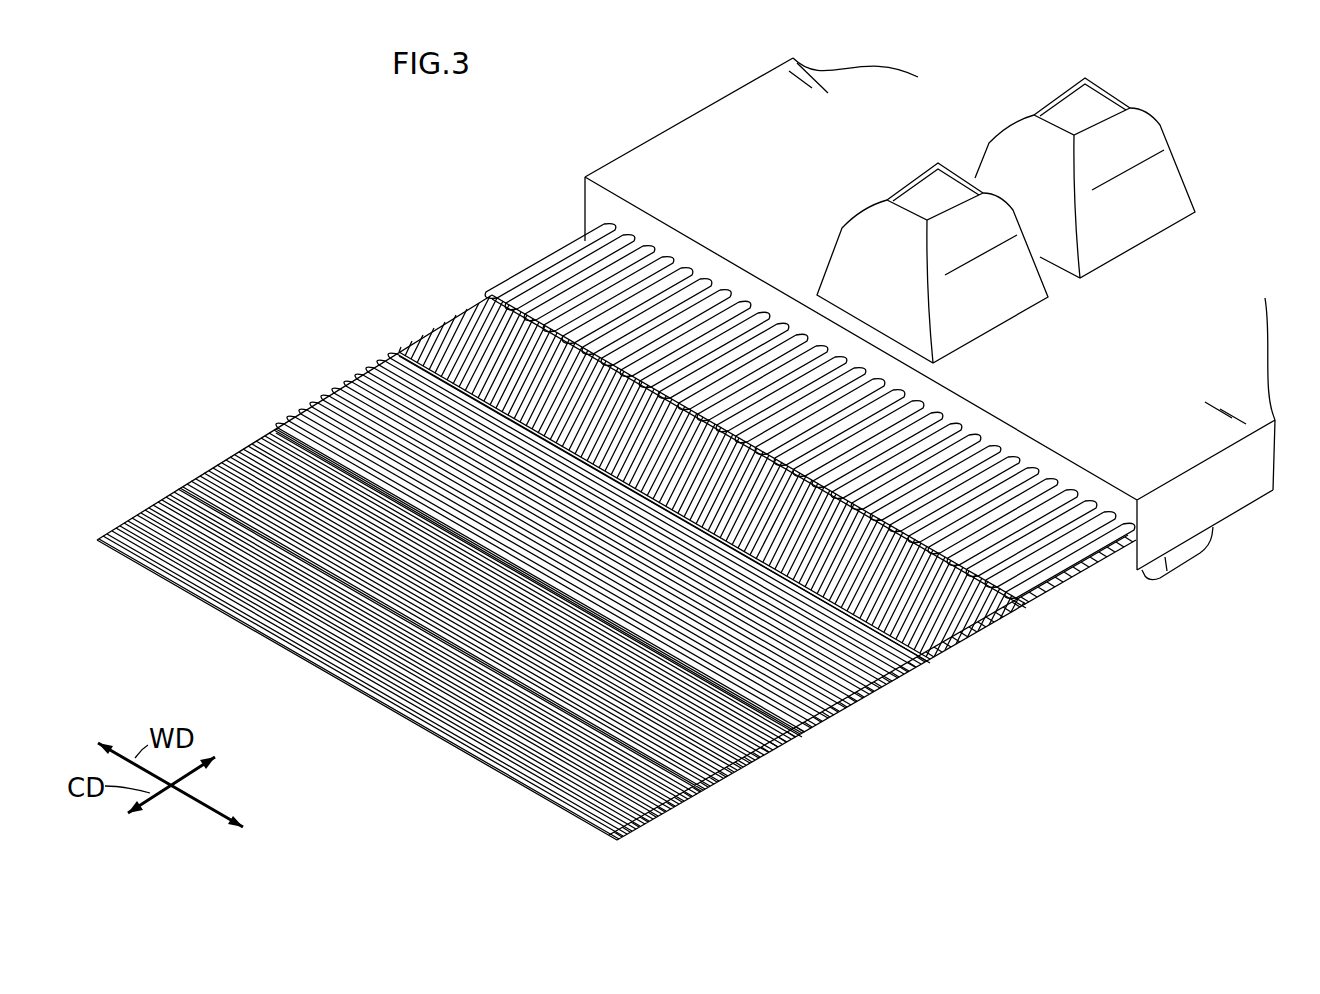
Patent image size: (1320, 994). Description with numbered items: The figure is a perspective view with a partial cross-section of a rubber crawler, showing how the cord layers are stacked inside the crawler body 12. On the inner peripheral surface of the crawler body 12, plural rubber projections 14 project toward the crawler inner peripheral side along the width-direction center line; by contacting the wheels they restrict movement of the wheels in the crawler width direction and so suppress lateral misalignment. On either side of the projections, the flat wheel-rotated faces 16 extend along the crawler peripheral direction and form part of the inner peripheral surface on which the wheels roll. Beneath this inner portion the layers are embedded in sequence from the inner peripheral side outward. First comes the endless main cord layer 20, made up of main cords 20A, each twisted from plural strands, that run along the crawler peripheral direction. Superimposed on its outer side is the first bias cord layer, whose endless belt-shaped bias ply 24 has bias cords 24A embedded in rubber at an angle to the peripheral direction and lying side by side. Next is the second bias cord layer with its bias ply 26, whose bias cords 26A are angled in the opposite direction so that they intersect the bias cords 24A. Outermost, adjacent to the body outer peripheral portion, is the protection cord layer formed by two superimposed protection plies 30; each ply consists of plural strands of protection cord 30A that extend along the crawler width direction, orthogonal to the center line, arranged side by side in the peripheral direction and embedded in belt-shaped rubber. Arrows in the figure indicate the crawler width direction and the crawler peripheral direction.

The crawler body 12 is at (650, 130).
The rubber projection 14 is at (1049, 104).
The wheel-rotated face 16 is at (880, 115).
The main cord layer 20 is at (549, 245).
The main cord 20A is at (528, 272).
The bias ply 24 is at (403, 325).
The bias cord 24A is at (455, 308).
The bias ply 26 is at (298, 395).
The bias cord 26A is at (348, 377).
The protection ply 30 is at (115, 512).
The protection cord 30A is at (147, 508).